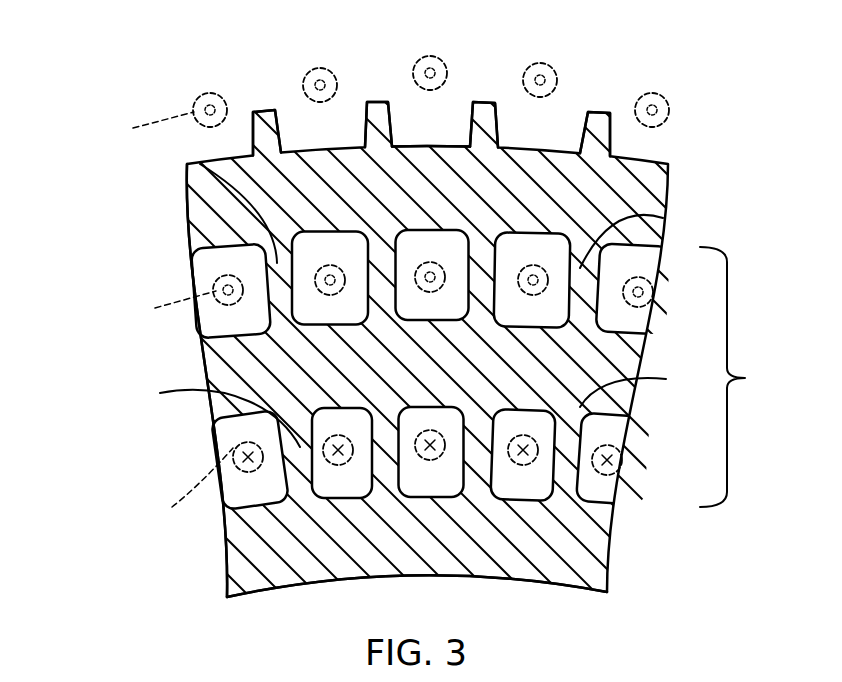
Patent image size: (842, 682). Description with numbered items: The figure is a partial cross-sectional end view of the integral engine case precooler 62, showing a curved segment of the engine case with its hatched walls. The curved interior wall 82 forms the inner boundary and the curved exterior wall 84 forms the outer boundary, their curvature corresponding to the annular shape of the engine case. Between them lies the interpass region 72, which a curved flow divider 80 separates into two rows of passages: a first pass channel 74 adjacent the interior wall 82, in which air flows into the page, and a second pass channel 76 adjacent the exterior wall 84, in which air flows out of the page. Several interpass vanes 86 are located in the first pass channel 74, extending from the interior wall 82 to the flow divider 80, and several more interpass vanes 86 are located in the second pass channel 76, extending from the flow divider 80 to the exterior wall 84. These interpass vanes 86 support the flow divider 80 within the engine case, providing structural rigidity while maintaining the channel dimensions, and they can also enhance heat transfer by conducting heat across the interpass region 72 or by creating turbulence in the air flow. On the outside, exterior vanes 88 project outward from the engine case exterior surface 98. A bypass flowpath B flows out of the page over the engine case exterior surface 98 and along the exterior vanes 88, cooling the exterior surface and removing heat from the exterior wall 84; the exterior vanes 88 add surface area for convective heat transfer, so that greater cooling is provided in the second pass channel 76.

The precooler 62 is at (174, 109).
The interpass region 72 is at (739, 377).
The first pass channel 74 is at (218, 426).
The second pass channel 76 is at (205, 270).
The flow divider 80 is at (232, 377).
The interior wall 82 is at (248, 558).
The exterior wall 84 is at (192, 212).
The interpass vanes 86 is at (197, 163).
The exterior vanes 88 is at (262, 112).
The engine case exterior surface 98 is at (435, 147).
The bypass flowpath B is at (322, 68).